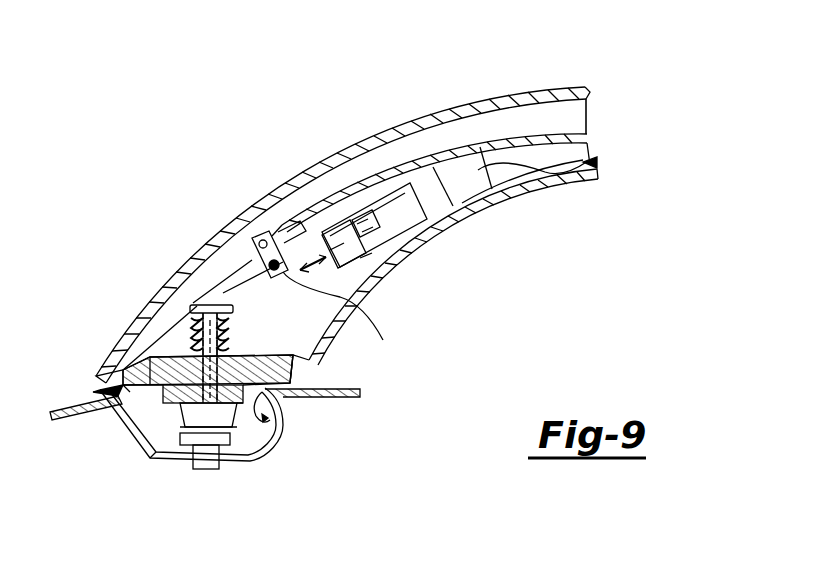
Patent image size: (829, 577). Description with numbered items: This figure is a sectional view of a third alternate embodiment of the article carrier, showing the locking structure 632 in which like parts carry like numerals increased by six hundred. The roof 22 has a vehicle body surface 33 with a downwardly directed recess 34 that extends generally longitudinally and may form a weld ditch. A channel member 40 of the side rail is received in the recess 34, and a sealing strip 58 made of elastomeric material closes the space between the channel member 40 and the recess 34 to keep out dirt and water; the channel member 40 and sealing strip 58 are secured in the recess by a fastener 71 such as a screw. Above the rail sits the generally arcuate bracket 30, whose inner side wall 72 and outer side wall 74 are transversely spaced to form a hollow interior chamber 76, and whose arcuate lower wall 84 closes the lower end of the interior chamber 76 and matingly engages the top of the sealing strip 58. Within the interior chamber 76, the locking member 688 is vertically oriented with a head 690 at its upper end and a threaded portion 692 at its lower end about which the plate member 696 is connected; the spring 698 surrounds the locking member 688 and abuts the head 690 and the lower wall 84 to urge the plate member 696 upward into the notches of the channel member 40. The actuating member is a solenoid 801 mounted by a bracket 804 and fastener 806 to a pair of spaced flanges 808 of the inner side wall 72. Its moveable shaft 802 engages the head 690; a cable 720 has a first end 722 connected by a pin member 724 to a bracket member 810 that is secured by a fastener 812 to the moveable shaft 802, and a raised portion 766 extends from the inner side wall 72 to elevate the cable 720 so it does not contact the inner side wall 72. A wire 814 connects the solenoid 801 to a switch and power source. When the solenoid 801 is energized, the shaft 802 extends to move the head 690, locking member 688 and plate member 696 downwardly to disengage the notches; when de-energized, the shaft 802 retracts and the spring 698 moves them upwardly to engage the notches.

The roof 22 is at (357, 395).
The bracket 30 is at (529, 92).
The vehicle body surface 33 is at (345, 389).
The recess 34 is at (268, 418).
The channel member 40 is at (125, 423).
The sealing strip 58 is at (270, 418).
The fastener 71 is at (205, 462).
The inner side wall 72 is at (533, 188).
The outer side wall 74 is at (413, 127).
The interior chamber 76 is at (568, 113).
The lower wall 84 is at (123, 365).
The locking structure 632 is at (332, 207).
The locking member 688 is at (230, 328).
The head 690 is at (228, 296).
The threaded portion 692 is at (231, 428).
The plate member 696 is at (187, 438).
The spring 698 is at (230, 346).
The cable 720 is at (483, 147).
The first end 722 is at (277, 230).
The pin member 724 is at (259, 240).
The raised portion 766 is at (545, 165).
The solenoid 801 is at (357, 232).
The moveable shaft 802 is at (221, 287).
The bracket 804 is at (357, 303).
The fastener 806 is at (372, 226).
The flange 808 is at (418, 242).
The bracket member 810 is at (316, 268).
The fastener 812 is at (384, 341).
The wire 814 is at (592, 156).